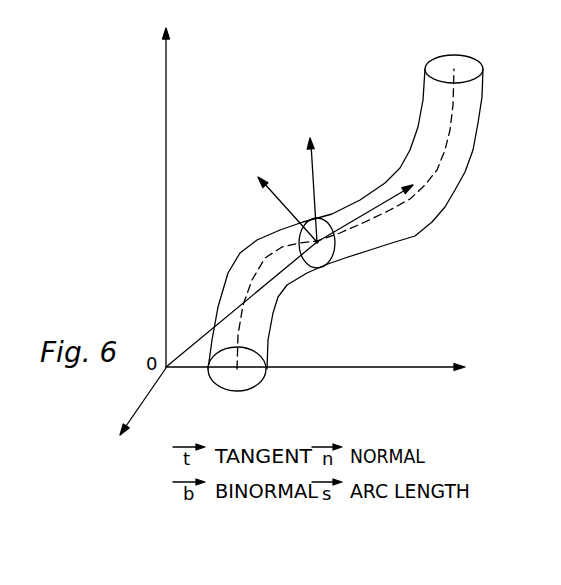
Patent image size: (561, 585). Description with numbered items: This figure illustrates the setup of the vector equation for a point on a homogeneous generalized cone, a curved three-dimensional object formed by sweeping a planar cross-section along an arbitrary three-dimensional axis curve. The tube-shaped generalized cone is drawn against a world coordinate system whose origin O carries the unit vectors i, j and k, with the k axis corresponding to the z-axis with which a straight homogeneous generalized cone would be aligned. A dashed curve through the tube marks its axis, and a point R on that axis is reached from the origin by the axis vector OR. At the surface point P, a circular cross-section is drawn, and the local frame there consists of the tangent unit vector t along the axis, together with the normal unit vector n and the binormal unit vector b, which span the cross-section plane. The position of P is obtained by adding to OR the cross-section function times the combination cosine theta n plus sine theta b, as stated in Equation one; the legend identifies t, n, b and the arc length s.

The point on the generalized cone surface P is at (305, 213).
The point on the axis R is at (317, 243).
The normal unit vector n is at (332, 107).
The binormal unit vector b is at (237, 165).
The tangent unit vector t is at (442, 143).
The i unit vector i is at (133, 447).
The j unit vector j is at (430, 386).
The k unit vector k is at (143, 25).